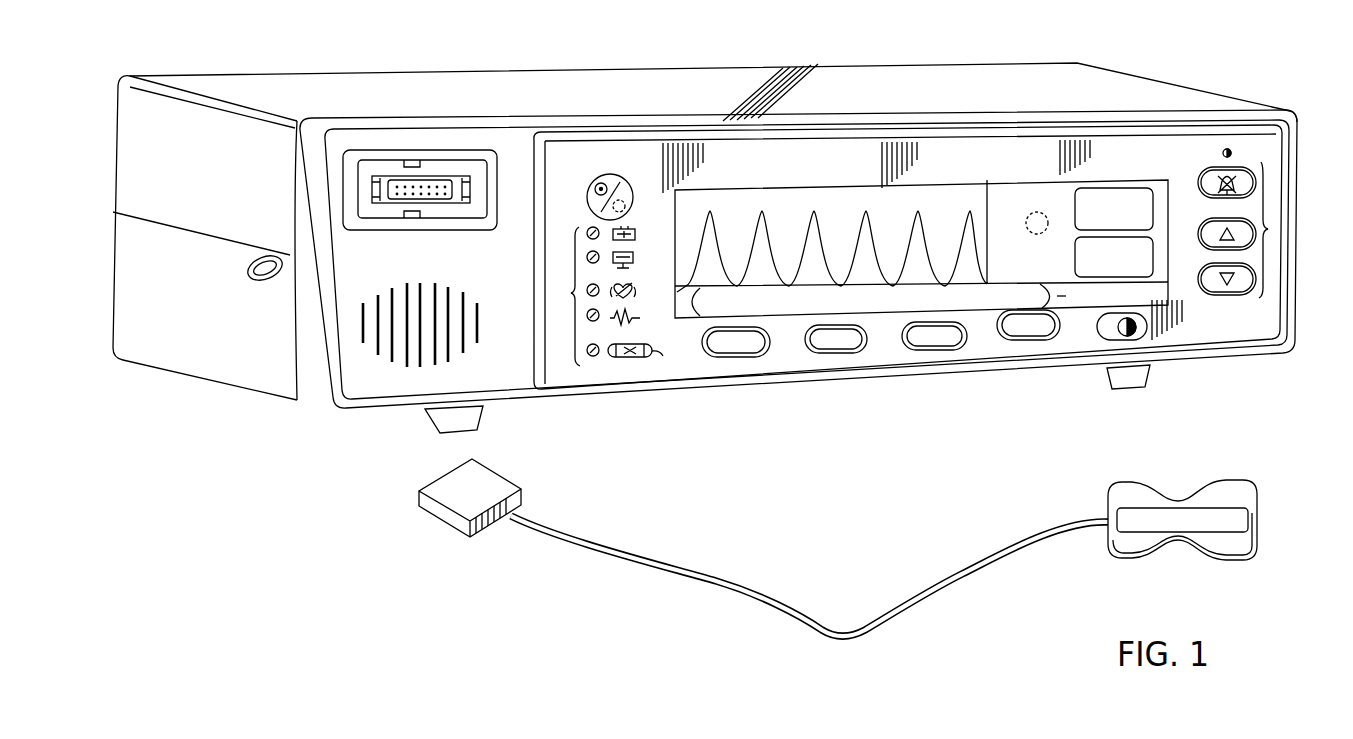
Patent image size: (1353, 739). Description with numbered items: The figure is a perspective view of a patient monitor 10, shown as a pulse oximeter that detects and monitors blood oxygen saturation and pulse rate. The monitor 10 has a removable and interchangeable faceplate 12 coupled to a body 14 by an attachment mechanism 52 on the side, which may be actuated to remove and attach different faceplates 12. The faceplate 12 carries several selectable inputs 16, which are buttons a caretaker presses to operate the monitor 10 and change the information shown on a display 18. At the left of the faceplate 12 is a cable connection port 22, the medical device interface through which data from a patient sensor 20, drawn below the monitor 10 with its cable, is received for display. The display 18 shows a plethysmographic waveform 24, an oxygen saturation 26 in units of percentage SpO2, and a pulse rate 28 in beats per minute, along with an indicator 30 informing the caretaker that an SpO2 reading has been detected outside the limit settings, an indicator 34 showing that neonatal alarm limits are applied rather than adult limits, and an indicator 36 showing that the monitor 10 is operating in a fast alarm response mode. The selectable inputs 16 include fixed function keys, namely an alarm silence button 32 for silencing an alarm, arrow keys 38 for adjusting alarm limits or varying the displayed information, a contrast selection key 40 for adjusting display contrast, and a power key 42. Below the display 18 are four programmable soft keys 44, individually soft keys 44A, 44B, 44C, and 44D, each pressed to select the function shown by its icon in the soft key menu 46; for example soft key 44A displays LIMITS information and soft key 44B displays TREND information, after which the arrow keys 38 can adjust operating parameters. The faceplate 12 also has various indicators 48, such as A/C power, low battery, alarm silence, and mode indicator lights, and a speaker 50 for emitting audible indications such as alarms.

The patient monitor 10 is at (692, 45).
The faceplate 12 is at (313, 387).
The body 14 is at (162, 337).
The selectable inputs 16 is at (604, 171).
The display 18 is at (720, 195).
The patient sensor 20 is at (926, 582).
The cable connection port 22 is at (422, 163).
The plethysmographic waveform 24 is at (812, 217).
The oxygen saturation 26 is at (1105, 190).
The pulse rate 28 is at (1157, 247).
The indicator 30 is at (1026, 228).
The alarm silence button 32 is at (1257, 170).
The indicator 34 is at (1170, 300).
The indicator 36 is at (1087, 300).
The arrow keys 38 is at (1251, 220).
The contrast selection key 40 is at (1150, 330).
The power key 42 is at (620, 176).
The soft keys 44 is at (893, 373).
The soft key 44A is at (762, 356).
The soft key 44B is at (845, 353).
The soft key 44C is at (967, 352).
The soft key 44D is at (1027, 340).
The soft key menu 46 is at (690, 307).
The indicators 48 is at (570, 293).
The speaker 50 is at (405, 357).
The attachment mechanism 52 is at (262, 283).